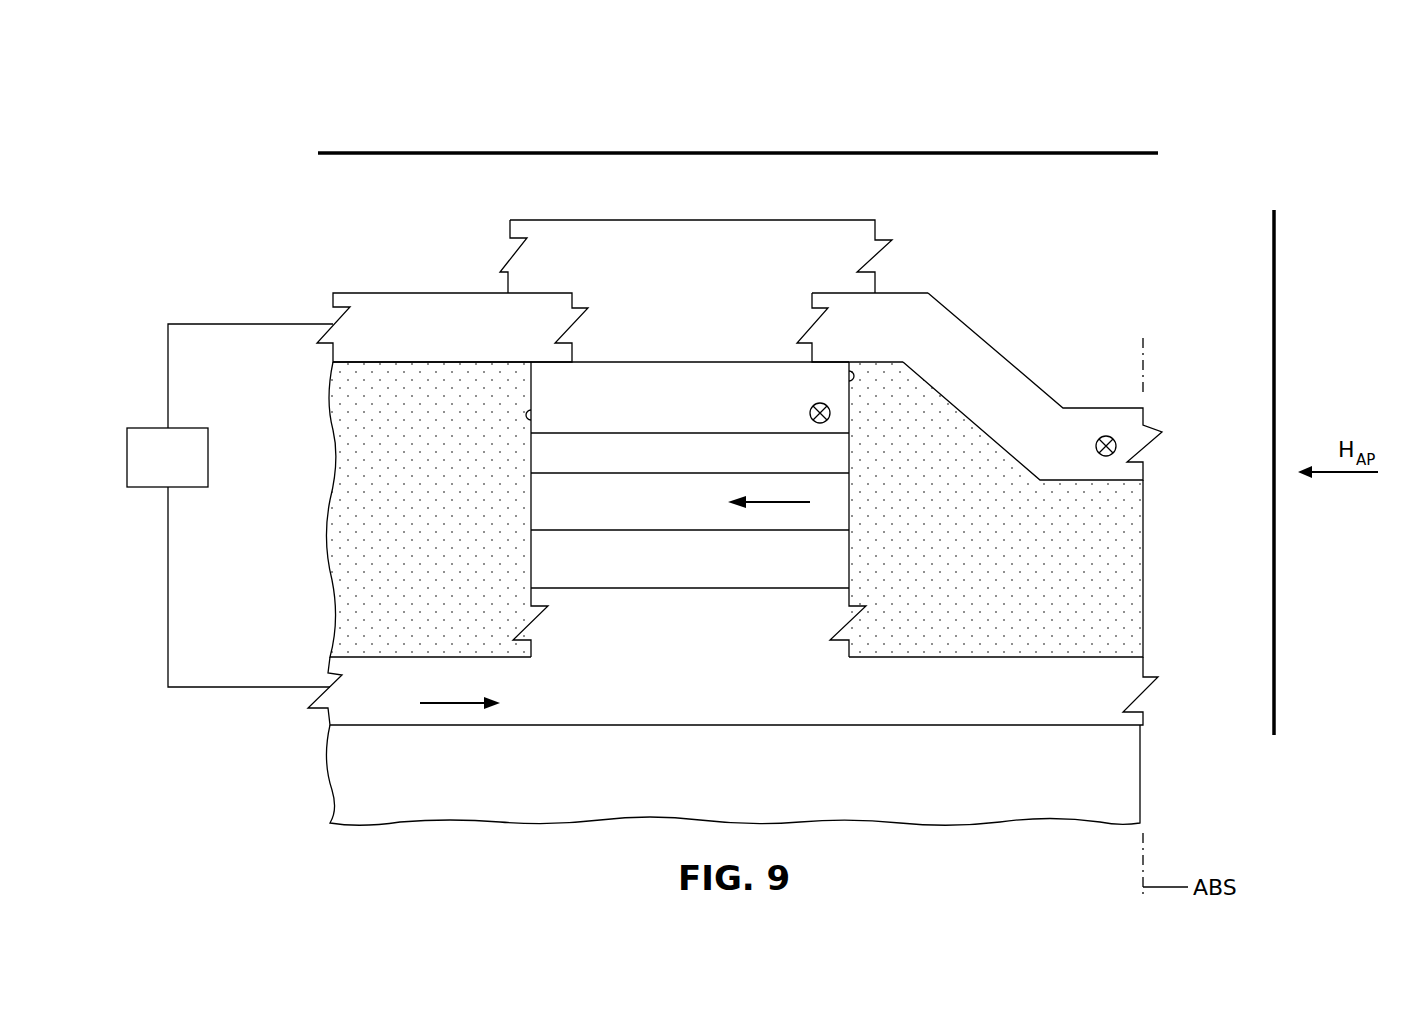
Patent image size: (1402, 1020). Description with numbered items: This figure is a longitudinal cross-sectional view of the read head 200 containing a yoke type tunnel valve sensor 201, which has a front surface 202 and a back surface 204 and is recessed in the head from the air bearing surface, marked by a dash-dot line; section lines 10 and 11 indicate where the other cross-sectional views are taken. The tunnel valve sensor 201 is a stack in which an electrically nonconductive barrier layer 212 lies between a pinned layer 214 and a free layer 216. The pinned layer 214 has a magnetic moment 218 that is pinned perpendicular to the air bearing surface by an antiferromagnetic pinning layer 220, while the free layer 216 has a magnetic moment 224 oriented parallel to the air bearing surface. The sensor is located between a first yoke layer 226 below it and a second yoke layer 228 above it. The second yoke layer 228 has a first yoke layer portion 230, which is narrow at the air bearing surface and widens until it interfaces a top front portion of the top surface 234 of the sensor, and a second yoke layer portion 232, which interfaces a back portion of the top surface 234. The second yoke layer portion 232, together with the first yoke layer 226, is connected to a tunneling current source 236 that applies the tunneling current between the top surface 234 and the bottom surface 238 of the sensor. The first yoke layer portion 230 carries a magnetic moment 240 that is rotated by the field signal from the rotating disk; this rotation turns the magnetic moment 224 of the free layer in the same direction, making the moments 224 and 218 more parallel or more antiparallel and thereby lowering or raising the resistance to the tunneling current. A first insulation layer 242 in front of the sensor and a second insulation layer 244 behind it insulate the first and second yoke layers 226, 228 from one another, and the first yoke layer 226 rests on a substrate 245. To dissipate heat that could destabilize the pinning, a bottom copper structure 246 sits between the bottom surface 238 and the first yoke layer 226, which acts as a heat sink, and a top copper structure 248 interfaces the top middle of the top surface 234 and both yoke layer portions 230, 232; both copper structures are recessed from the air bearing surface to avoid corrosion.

The section line 10- 10 is at (328, 140).
The section line 11- 11 is at (1290, 218).
The read head 200 is at (360, 230).
The tunnel valve sensor 201 is at (624, 352).
The front surface 202 is at (849, 376).
The back surface 204 is at (531, 415).
The barrier layer 212 is at (609, 465).
The pinned layer 214 is at (609, 513).
The free layer 216 is at (609, 392).
The magnetic moment of pinned layer 218 is at (780, 506).
The antiferromagnetic pinning layer 220 is at (609, 573).
The magnetic moment of free layer 224 is at (810, 413).
The first yoke layer 226 is at (607, 705).
The second yoke layer 228 is at (514, 338).
The first yoke layer portion 230 is at (975, 343).
The second yoke layer portion 232 is at (450, 302).
The top surface 234 is at (752, 360).
The tunneling current source 236 is at (205, 443).
The bottom surface 238 is at (718, 588).
The magnetic moment of first yoke layer portion 240 is at (1104, 436).
The first insulation layer 242 is at (1132, 560).
The second insulation layer 244 is at (345, 548).
The substrate 245 is at (607, 785).
The bottom copper structure 246 is at (609, 637).
The top copper structure 248 is at (823, 228).